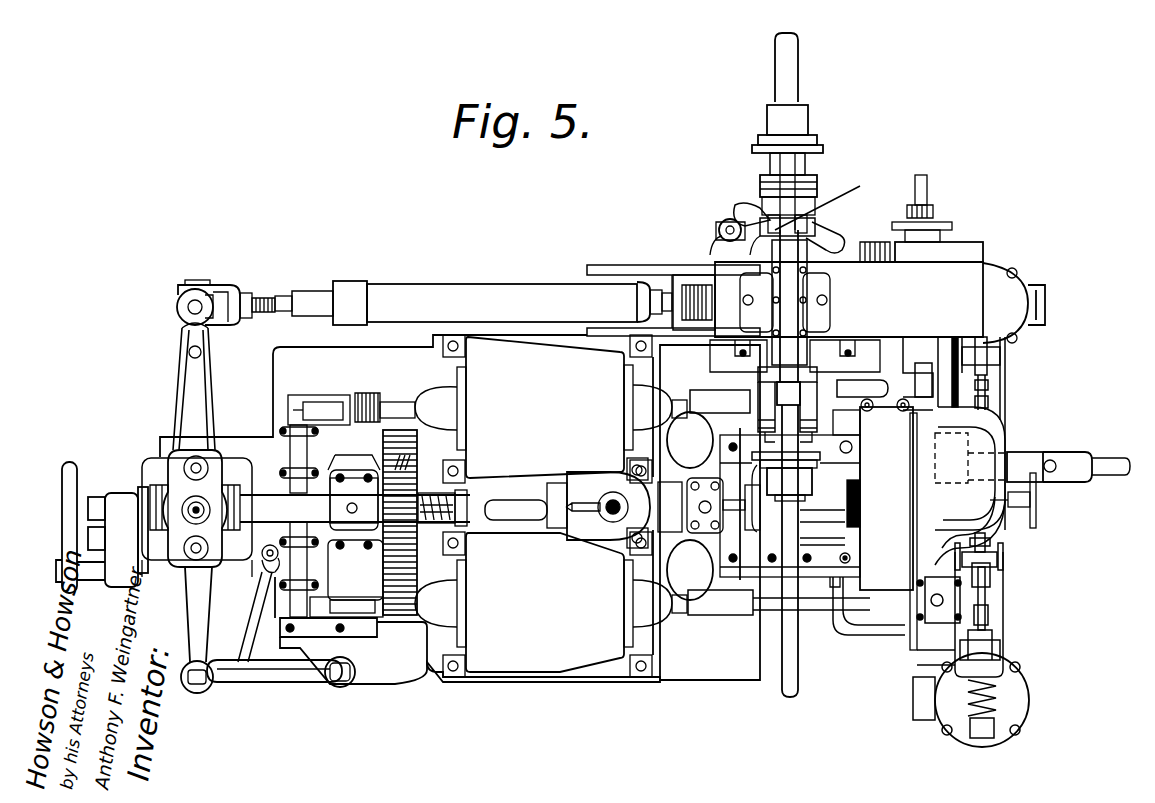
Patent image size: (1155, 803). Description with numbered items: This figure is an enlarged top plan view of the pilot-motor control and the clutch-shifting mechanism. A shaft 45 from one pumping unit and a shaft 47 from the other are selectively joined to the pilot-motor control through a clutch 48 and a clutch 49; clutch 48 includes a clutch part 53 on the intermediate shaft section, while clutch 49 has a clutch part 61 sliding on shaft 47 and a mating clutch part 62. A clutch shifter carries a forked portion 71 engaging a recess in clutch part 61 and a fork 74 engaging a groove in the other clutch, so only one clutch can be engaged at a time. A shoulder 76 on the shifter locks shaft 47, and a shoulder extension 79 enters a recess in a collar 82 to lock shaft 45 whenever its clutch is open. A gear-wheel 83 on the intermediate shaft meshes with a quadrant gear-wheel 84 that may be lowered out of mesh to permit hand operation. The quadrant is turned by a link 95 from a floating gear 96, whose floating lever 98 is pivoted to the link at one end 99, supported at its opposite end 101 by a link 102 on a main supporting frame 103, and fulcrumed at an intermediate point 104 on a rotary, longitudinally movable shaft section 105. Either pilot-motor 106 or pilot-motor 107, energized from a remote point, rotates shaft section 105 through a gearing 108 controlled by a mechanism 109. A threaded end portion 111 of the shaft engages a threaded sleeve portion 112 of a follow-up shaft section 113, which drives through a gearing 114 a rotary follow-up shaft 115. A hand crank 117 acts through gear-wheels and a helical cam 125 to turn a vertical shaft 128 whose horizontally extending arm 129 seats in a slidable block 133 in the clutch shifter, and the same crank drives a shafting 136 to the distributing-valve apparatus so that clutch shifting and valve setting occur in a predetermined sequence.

The shaft 45 is at (792, 76).
The collar 82 is at (823, 148).
The shoulder extension 79 is at (796, 162).
The fork 74 is at (760, 186).
The clutch 48 is at (805, 201).
The horizontally extending arm 129 is at (735, 210).
The vertical shaft 128 is at (716, 230).
The slidable block 133 is at (831, 200).
The clutch part 53 is at (803, 215).
The helical cam 125 is at (832, 223).
The shaft 47 is at (782, 625).
The link 95 is at (512, 293).
The end 99 is at (193, 296).
The floating lever 98 is at (178, 322).
The floating gear 96 is at (190, 365).
The intermediate point 104 is at (196, 503).
The shaft section 105 is at (253, 480).
The opposite end 101 is at (192, 640).
The link 102 is at (272, 680).
The main supporting frame 103 is at (375, 665).
The mechanism 109 is at (298, 470).
The gearing 108 is at (417, 462).
The end portion 111 is at (406, 468).
The sleeve portion 112 is at (452, 492).
The follow-up shaft section 113 is at (480, 522).
The rotary follow-up shaft 115 is at (530, 525).
The pilot-motor 106 is at (551, 409).
The pilot-motor 107 is at (551, 604).
The clutch 49 is at (724, 395).
The clutch part 62 is at (793, 404).
The clutch part 61 is at (835, 405).
The forked portion 71 is at (863, 416).
The shoulder 76 is at (789, 452).
The gearing 114 is at (888, 528).
The gear-wheel 84 is at (705, 305).
The gear-wheel 83 is at (820, 292).
The hand crank 117 is at (928, 205).
The shafting 136 is at (955, 413).